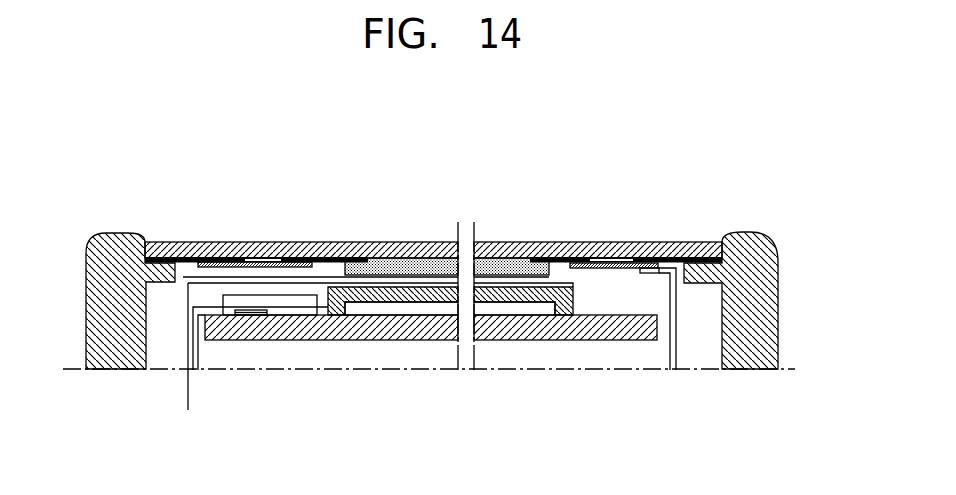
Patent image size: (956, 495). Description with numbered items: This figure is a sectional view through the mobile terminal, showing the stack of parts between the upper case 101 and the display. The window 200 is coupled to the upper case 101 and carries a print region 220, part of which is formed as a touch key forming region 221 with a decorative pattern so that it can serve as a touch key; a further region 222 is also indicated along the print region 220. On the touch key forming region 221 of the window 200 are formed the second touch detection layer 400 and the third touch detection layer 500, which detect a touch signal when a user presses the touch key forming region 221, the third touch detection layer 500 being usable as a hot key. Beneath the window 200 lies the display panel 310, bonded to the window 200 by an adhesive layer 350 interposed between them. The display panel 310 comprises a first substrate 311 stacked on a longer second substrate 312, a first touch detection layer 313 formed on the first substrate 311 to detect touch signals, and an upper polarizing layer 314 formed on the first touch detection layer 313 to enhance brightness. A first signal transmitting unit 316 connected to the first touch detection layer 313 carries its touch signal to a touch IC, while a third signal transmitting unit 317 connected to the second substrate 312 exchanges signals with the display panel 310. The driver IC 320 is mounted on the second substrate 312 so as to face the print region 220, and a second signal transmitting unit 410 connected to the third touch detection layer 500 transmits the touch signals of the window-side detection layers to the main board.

The upper case 101 is at (103, 240).
The window 200 is at (361, 243).
The print region 220 is at (212, 257).
The touch key forming region 221 is at (263, 259).
The second opening 222 is at (607, 262).
The second touch detection layer 400 is at (302, 267).
The third touch detection layer 500 is at (647, 268).
The display panel 310 is at (447, 432).
The first substrate 311 is at (337, 316).
The second substrate 312 is at (358, 312).
The first touch detection layer 313 is at (417, 289).
The upper polarizing layer 314 is at (393, 283).
The first signal transmitting unit 316 is at (183, 277).
The third signal transmitting unit 317 is at (196, 356).
The driver IC 320 is at (280, 312).
The adhesive layer 350 is at (500, 274).
The second signal transmitting unit 410 is at (673, 371).